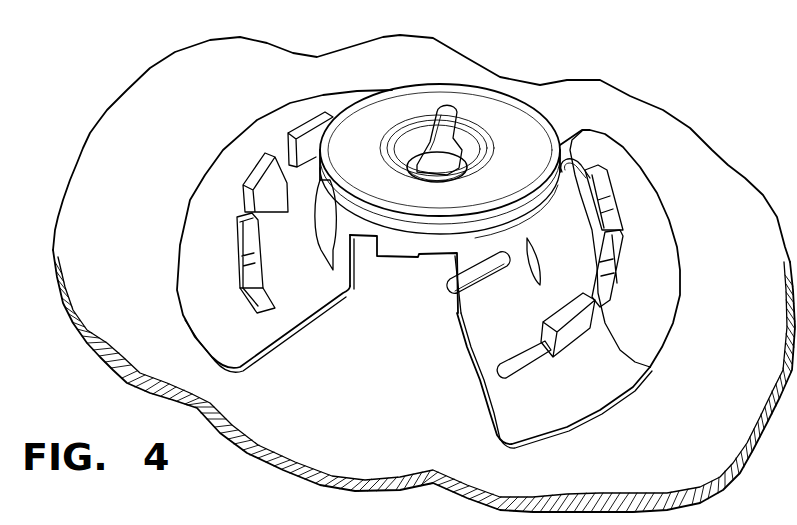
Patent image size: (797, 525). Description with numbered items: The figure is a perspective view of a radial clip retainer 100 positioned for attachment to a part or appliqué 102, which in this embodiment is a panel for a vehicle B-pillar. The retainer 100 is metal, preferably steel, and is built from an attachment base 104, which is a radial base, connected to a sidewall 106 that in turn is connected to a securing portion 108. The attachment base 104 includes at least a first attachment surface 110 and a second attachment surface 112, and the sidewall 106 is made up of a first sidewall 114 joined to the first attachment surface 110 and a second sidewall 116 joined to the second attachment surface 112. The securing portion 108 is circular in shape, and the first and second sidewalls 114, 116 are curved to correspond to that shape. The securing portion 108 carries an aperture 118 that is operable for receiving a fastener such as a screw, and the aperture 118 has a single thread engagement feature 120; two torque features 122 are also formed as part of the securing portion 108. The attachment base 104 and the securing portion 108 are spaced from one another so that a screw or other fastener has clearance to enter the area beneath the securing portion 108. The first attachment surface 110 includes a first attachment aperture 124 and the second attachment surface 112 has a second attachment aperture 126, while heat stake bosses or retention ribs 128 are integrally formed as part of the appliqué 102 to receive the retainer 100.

The retainer 100 is at (218, 129).
The appliqué 102 is at (274, 84).
The attachment base 104 is at (647, 173).
The sidewall 106 is at (342, 255).
The securing portion 108 is at (458, 93).
The first attachment surface 110 is at (668, 262).
The second attachment surface 112 is at (218, 337).
The first sidewall 114 is at (453, 290).
The second sidewall 116 is at (366, 259).
The aperture 118 is at (430, 153).
The single thread engagement feature 120 is at (458, 136).
The torque features 122 is at (380, 262).
The first attachment aperture 124 is at (578, 158).
The second attachment aperture 126 is at (260, 307).
The heat stake bosses 128 is at (603, 180).